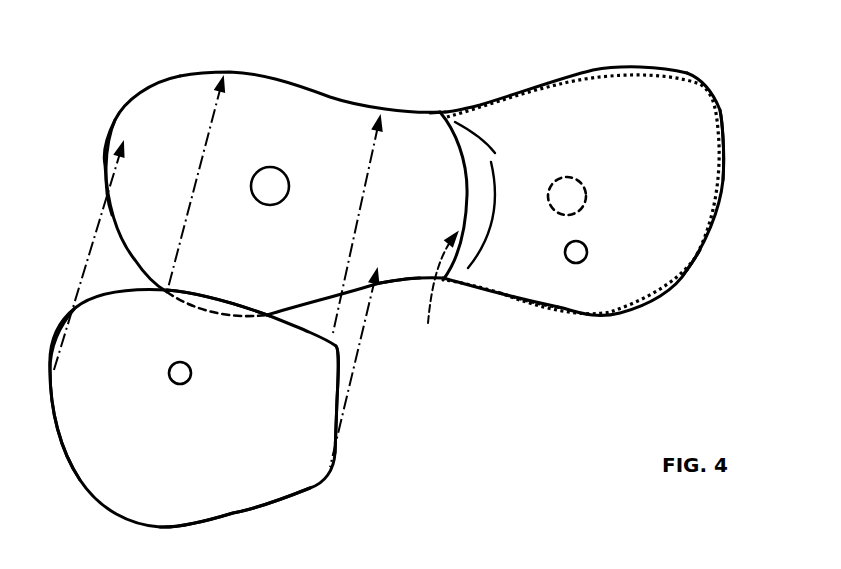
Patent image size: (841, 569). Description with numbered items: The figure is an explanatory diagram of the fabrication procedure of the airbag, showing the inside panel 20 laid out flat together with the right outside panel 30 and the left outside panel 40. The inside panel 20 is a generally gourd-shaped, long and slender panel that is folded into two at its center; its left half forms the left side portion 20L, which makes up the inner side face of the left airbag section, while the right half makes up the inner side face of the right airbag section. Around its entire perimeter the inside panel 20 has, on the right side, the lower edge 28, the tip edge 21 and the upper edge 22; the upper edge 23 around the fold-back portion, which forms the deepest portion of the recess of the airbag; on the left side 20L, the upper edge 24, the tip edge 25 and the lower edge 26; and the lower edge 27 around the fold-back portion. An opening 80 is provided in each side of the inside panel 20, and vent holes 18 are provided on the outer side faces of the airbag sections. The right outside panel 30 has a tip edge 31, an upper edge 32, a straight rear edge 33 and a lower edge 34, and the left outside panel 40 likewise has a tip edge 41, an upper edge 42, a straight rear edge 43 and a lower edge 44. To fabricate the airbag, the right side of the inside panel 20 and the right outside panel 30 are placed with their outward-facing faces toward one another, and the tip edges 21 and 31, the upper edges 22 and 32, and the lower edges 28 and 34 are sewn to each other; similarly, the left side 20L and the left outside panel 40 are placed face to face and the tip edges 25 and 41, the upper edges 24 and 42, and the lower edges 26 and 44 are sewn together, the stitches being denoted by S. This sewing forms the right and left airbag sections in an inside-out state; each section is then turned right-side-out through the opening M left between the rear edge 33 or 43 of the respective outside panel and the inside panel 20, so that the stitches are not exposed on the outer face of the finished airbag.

The vent hole 18 is at (191, 372).
The inside panel 20 is at (418, 243).
The left side portion 20L is at (163, 118).
The tip edge 21 is at (724, 208).
The upper edge 22 is at (617, 64).
The upper edge 23 is at (425, 111).
The upper edge 24 is at (257, 78).
The tip edge 25 is at (107, 173).
The lower edge 26 is at (310, 312).
The lower edge 27 is at (397, 284).
The lower edge 28 is at (543, 312).
The right outside panel 30 is at (517, 118).
The tip edge 31 is at (724, 172).
The upper edge 32 is at (583, 68).
The straight rear edge 33 is at (467, 193).
The lower edge 34 is at (588, 318).
The left outside panel 40 is at (217, 395).
The tip edge 41 is at (67, 450).
The upper edge 42 is at (220, 297).
The straight rear edge 43 is at (337, 452).
The lower edge 44 is at (244, 514).
The opening 80 is at (276, 178).
The opening M is at (437, 292).
The stitches S is at (678, 270).